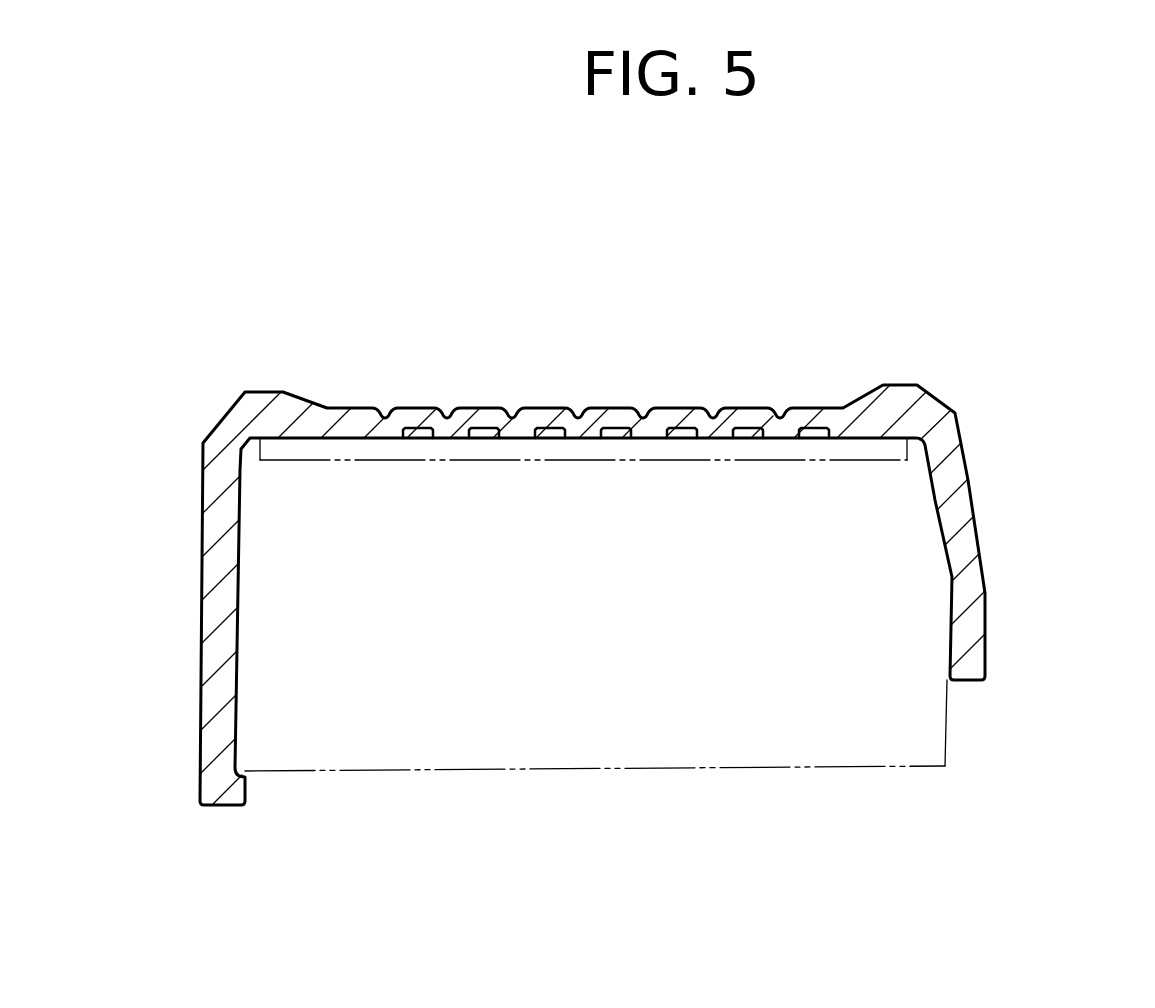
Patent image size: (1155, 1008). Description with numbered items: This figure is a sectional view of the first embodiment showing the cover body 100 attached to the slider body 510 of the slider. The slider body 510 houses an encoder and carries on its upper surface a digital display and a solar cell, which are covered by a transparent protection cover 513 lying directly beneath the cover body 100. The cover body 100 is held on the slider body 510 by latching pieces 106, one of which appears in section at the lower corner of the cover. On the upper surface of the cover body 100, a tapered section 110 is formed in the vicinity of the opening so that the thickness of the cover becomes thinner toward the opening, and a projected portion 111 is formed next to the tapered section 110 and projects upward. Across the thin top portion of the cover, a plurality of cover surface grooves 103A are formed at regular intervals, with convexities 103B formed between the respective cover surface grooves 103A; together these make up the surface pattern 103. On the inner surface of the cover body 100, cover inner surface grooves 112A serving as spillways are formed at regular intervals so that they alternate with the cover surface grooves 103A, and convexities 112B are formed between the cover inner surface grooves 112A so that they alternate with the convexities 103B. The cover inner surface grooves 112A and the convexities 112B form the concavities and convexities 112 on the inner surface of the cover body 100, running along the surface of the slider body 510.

The cover body 100 is at (1018, 445).
The cover surface grooves and convexities 103 is at (632, 353).
The cover surface grooves 103A is at (585, 408).
The convexities 103B is at (680, 407).
The latching pieces 106 is at (246, 790).
The tapered section 110 is at (308, 403).
The projected portion 111 is at (272, 390).
The concavities and convexities 112 is at (455, 360).
The cover inner surface grooves 112A is at (423, 439).
The convexities 112B is at (512, 439).
The slider body 510 is at (788, 768).
The transparent protection cover 513 is at (812, 428).